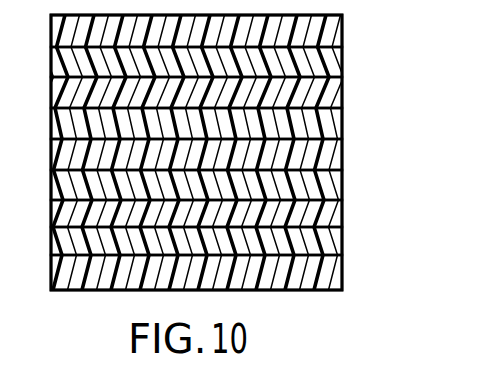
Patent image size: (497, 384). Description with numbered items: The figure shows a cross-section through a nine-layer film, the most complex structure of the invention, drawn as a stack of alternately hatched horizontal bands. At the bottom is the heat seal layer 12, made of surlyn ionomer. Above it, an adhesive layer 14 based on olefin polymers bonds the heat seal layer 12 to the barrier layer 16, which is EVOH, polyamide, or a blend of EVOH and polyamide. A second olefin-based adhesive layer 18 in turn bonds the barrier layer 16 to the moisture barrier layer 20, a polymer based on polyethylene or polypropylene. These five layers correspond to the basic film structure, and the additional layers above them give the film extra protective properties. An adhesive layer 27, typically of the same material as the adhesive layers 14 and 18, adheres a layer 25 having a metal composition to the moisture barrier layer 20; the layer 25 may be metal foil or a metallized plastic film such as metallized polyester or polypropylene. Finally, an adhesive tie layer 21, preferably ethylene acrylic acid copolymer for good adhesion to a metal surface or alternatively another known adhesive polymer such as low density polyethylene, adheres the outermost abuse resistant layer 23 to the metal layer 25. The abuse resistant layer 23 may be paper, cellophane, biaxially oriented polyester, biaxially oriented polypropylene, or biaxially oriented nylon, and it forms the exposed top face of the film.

The heat seal layer 12 is at (343, 275).
The adhesive layer 14 is at (343, 245).
The barrier layer 16 is at (343, 217).
The adhesive layer 18 is at (343, 187).
The moisture barrier layer 20 is at (343, 155).
The adhesive tie layer 21 is at (343, 63).
The abuse resistant layer 23 is at (343, 30).
The metal composition layer 25 is at (343, 93).
The adhesive layer 27 is at (343, 125).